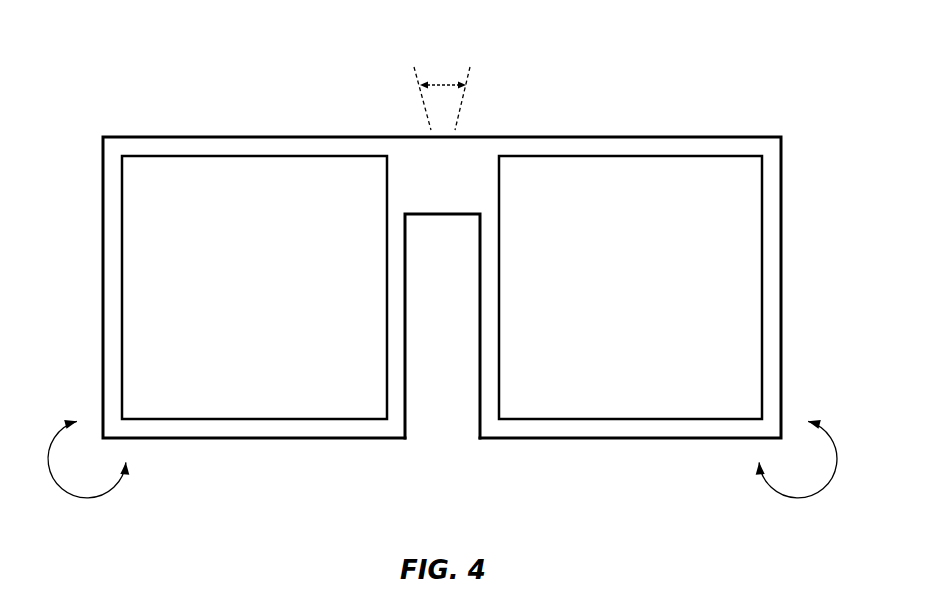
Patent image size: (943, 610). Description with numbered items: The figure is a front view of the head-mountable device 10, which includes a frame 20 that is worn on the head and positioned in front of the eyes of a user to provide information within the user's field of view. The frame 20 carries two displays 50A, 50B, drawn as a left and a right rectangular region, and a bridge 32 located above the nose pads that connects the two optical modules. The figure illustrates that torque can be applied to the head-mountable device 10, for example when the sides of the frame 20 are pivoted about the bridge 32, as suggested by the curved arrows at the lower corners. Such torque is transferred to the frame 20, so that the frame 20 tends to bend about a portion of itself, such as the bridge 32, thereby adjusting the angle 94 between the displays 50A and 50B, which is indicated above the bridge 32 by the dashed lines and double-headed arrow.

The head-mountable device 10 is at (55, 148).
The frame 20 is at (151, 137).
The bridge 32 is at (466, 157).
The display 50A is at (267, 157).
The display 50B is at (603, 157).
The angle 94 is at (442, 81).